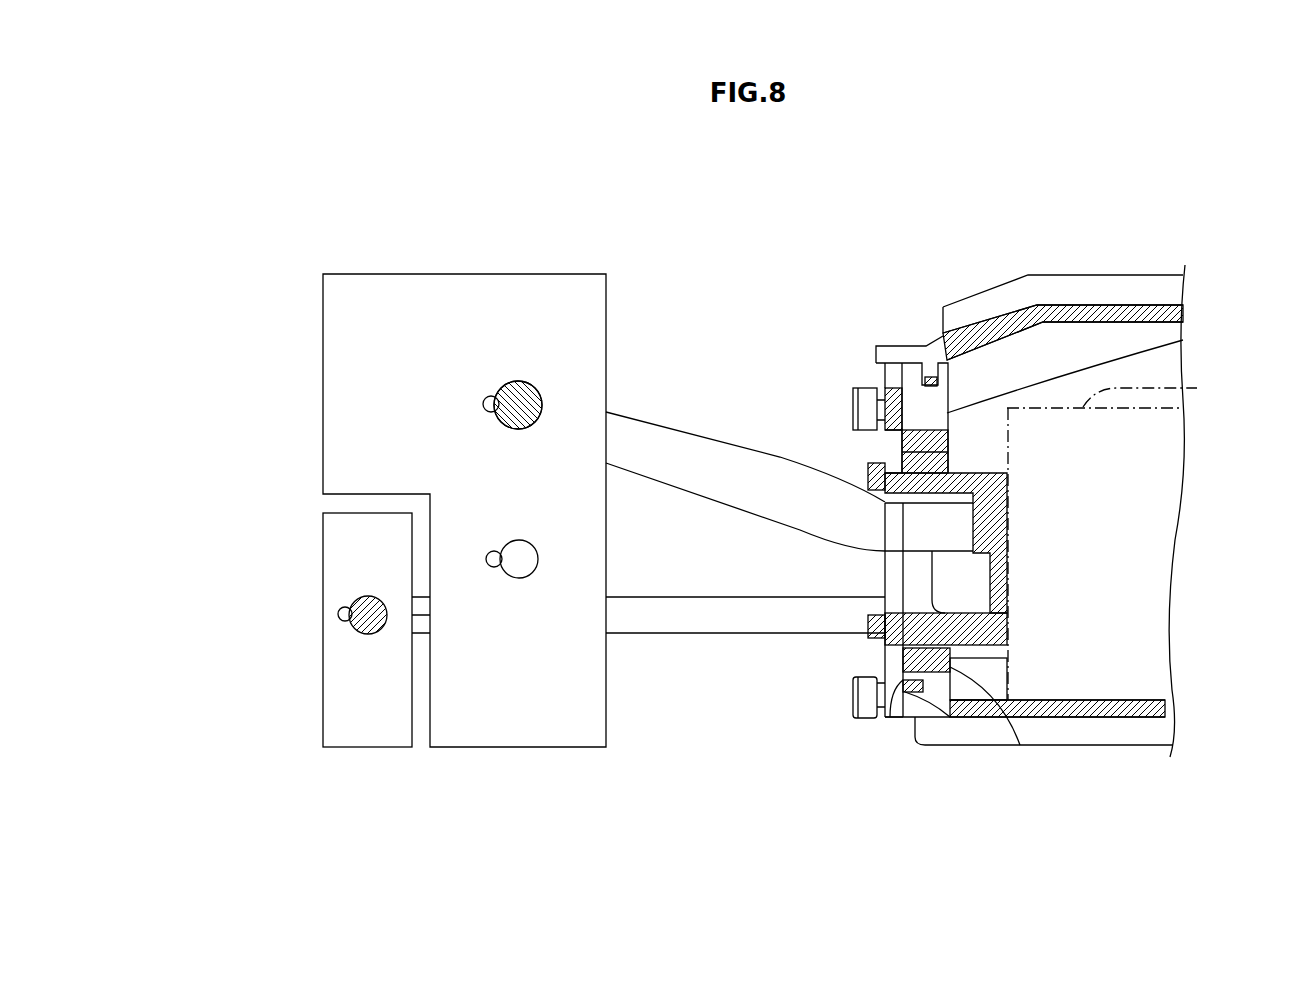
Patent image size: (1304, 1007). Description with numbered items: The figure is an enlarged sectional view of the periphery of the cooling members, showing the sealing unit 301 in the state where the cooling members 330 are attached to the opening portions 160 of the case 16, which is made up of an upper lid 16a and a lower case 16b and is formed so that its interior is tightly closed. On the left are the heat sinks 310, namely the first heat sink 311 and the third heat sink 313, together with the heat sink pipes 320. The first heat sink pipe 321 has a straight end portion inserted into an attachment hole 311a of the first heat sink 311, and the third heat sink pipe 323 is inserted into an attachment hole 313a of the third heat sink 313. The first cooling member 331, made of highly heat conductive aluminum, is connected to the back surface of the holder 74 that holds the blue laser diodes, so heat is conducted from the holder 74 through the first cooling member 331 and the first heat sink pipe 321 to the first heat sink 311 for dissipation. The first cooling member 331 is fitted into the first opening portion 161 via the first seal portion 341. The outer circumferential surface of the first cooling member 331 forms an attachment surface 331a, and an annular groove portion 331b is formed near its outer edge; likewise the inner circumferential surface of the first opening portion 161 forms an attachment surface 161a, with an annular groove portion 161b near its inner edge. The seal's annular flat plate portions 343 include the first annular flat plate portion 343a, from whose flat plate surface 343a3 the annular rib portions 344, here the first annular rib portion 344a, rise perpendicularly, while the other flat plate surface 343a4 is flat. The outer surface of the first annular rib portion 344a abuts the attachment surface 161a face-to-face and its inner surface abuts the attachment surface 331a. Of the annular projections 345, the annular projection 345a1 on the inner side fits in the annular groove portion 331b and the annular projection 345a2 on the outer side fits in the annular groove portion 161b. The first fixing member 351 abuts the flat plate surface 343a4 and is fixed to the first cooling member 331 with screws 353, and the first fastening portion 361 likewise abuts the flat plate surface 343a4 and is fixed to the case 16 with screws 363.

The case 16 is at (1035, 473).
The upper lid 16a is at (1068, 312).
The lower case 16b is at (1145, 745).
The holder 74 is at (1197, 388).
The opening portions 160 is at (986, 529).
The first opening portion 161 is at (986, 529).
The attachment surface 161a is at (885, 440).
The annular groove portion 161b is at (1183, 340).
The sealing unit 301 is at (862, 758).
The heat sinks 310 is at (402, 464).
The first heat sink 311 is at (464, 470).
The attachment hole 311a is at (528, 383).
The third heat sink 313 is at (314, 629).
The attachment hole 313a is at (360, 635).
The heat sink pipes 320 is at (541, 468).
The first heat sink pipe 321 is at (540, 383).
The third heat sink pipe 323 is at (345, 613).
The cooling members 330 is at (1086, 554).
The first cooling member 331 is at (1086, 554).
The attachment surface 331a is at (950, 432).
The annular groove portion 331b is at (952, 452).
The first seal portion 341 is at (925, 365).
The annular flat plate portions 343 is at (1017, 677).
The first annular flat plate portion 343a is at (870, 655).
The flat plate surface 343a3 is at (1008, 650).
The flat plate surface 343a4 is at (890, 720).
The annular rib portions 344 is at (998, 756).
The first annular rib portion 344a is at (925, 690).
The annular projections 345 is at (1089, 699).
The annular projection 345a1 is at (1007, 628).
The annular projection 345a2 is at (945, 715).
The first fixing member 351 is at (870, 470).
The screws 353 is at (872, 485).
The first fastening portion 361 is at (890, 385).
The screws 363 is at (862, 395).